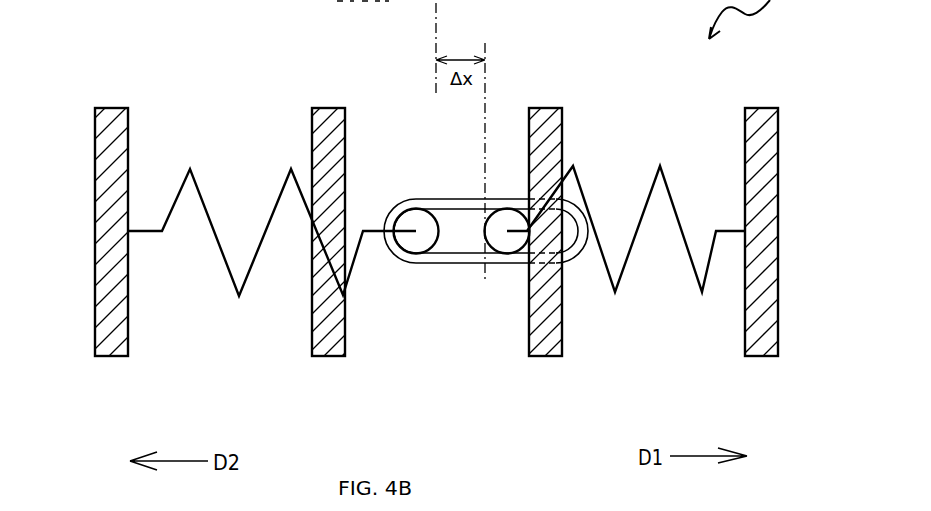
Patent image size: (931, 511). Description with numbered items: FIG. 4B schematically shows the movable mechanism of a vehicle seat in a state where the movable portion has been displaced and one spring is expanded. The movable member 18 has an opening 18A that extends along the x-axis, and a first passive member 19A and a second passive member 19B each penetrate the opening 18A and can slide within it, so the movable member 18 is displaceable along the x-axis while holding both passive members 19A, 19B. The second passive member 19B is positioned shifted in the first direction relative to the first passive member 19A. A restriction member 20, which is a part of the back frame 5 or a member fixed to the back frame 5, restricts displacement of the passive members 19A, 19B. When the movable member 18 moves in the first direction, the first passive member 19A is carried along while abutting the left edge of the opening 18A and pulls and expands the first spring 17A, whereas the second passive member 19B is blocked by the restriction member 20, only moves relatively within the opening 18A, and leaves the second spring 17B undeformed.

The back frame 5 is at (99, 147).
The first spring 17A is at (202, 193).
The second spring 17B is at (648, 187).
The movable member 18 is at (417, 207).
The opening 18A is at (449, 213).
The first passive member 19A is at (402, 243).
The second passive member 19B is at (505, 243).
The restriction member 20 is at (331, 107).